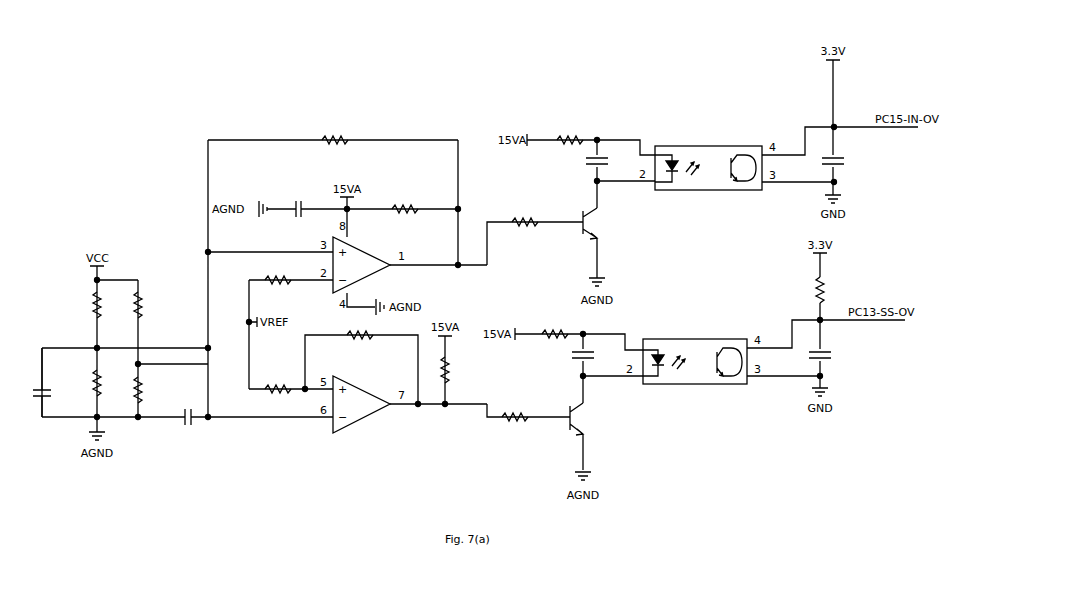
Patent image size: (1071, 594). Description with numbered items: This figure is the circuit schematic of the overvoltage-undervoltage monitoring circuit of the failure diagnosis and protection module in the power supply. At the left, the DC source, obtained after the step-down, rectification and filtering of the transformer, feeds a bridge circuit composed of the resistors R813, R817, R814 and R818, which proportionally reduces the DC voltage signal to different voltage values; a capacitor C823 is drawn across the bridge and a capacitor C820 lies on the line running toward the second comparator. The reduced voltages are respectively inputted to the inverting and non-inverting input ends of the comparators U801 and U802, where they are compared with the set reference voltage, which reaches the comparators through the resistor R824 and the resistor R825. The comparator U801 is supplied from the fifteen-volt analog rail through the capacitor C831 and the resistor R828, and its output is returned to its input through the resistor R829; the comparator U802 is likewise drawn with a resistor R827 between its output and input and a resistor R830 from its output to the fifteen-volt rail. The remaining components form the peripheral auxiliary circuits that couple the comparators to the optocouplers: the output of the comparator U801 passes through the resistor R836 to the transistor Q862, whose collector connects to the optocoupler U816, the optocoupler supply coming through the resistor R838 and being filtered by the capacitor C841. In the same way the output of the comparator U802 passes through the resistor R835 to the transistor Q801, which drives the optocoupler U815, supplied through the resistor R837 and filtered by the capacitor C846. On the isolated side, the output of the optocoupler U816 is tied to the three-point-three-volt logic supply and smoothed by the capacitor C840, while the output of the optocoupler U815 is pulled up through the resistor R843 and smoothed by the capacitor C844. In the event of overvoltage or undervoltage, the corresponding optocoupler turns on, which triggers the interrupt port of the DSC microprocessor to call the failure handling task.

The bridge circuit resistor R813 is at (112, 305).
The bridge circuit resistor R817 is at (153, 305).
The bridge circuit resistor R814 is at (112, 383).
The bridge circuit resistor R818 is at (153, 390).
The capacitor C823 is at (58, 382).
The capacitor C820 is at (190, 412).
The feedback resistor R829 is at (335, 133).
The capacitor C831 is at (299, 201).
The resistor R828 is at (405, 202).
The resistor R824 is at (278, 273).
The comparator U801 is at (372, 265).
The resistor R825 is at (276, 382).
The resistor R827 is at (360, 328).
The pull-up resistor R830 is at (460, 370).
The comparator U802 is at (372, 405).
The base resistor R836 is at (525, 215).
The resistor R838 is at (570, 133).
The capacitor C841 is at (613, 161).
The transistor Q862 is at (609, 243).
The optocoupler U816 is at (708, 169).
The capacitor C840 is at (849, 161).
The base resistor R835 is at (515, 410).
The resistor R837 is at (555, 327).
The capacitor C846 is at (599, 355).
The transistor Q801 is at (596, 436).
The optocoupler U815 is at (695, 363).
The pull-up resistor R843 is at (835, 290).
The capacitor C844 is at (836, 355).